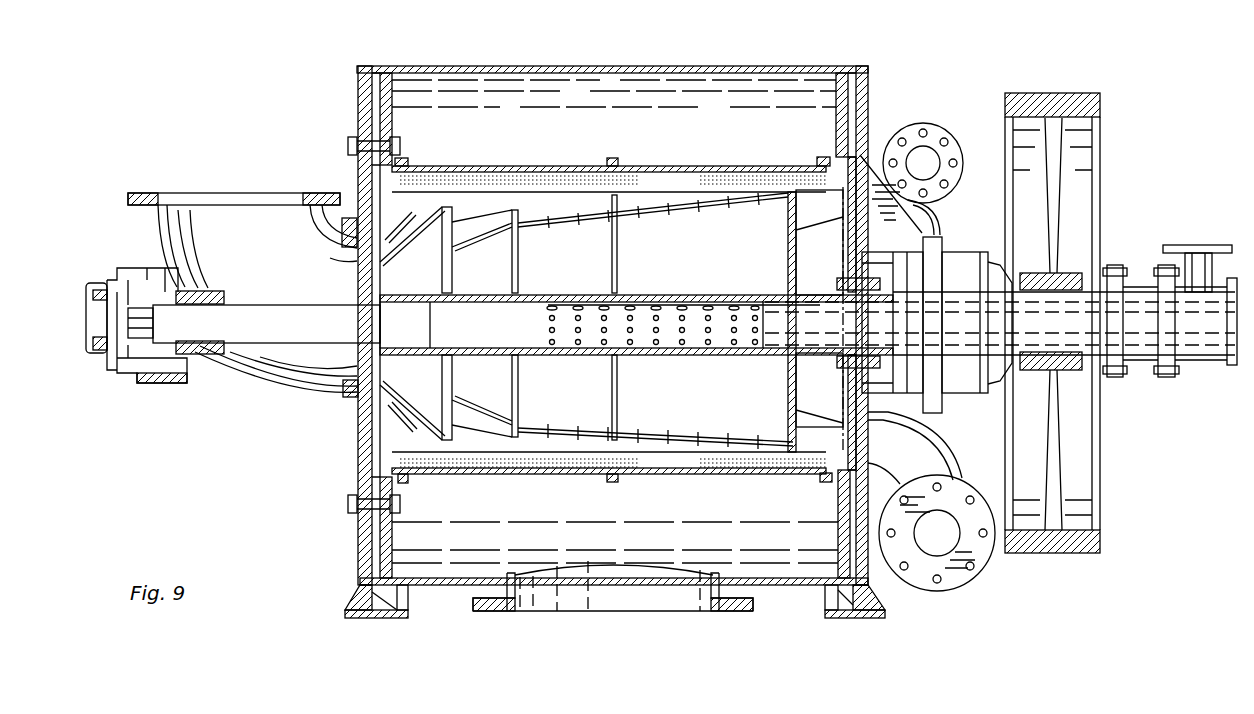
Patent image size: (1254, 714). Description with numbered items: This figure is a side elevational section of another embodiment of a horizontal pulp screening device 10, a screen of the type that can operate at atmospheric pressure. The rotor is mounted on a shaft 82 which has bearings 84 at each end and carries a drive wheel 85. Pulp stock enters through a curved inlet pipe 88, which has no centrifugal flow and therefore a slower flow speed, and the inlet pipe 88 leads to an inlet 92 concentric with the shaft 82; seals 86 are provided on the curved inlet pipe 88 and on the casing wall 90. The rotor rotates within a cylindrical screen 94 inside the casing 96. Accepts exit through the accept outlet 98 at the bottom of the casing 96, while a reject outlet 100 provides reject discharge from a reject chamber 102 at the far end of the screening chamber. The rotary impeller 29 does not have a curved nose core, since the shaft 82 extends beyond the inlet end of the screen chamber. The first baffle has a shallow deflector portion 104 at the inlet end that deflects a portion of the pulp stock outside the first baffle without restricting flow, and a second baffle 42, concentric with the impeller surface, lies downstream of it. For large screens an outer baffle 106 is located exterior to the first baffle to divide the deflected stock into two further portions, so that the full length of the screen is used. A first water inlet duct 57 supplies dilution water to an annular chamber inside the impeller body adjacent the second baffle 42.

The pulp screening device 10 is at (272, 494).
The rotary impeller 29 is at (456, 245).
The second baffle 42 is at (463, 430).
The first water inlet duct 57 is at (1233, 322).
The shaft 82 is at (289, 312).
The bearings 84 is at (106, 356).
The drive wheel 85 is at (1077, 93).
The seals 86 is at (212, 356).
The inlet pipe 88 is at (232, 192).
The casing wall 90 is at (860, 155).
The inlet 92 is at (322, 392).
The cylindrical screen 94 is at (535, 463).
The casing 96 is at (447, 66).
The accept outlet 98 is at (605, 603).
The reject outlet 100 is at (943, 513).
The reject chamber 102 is at (817, 378).
The shallow deflector portion 104 is at (412, 368).
The outer baffle 106 is at (392, 238).